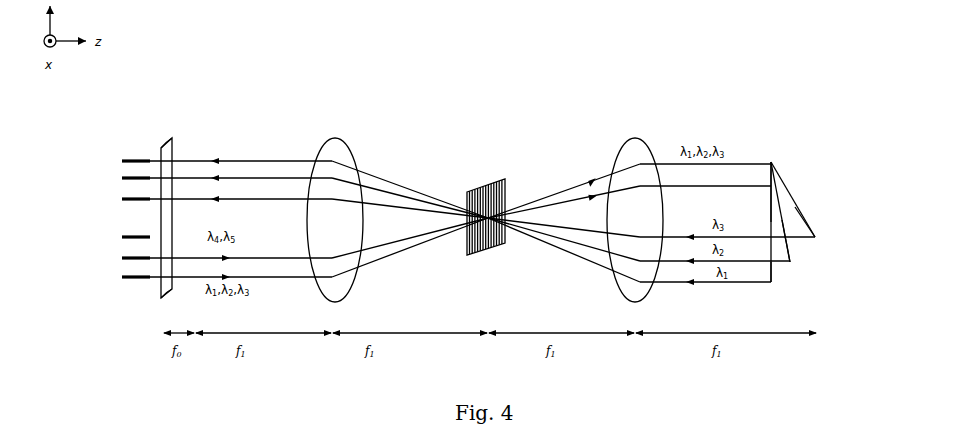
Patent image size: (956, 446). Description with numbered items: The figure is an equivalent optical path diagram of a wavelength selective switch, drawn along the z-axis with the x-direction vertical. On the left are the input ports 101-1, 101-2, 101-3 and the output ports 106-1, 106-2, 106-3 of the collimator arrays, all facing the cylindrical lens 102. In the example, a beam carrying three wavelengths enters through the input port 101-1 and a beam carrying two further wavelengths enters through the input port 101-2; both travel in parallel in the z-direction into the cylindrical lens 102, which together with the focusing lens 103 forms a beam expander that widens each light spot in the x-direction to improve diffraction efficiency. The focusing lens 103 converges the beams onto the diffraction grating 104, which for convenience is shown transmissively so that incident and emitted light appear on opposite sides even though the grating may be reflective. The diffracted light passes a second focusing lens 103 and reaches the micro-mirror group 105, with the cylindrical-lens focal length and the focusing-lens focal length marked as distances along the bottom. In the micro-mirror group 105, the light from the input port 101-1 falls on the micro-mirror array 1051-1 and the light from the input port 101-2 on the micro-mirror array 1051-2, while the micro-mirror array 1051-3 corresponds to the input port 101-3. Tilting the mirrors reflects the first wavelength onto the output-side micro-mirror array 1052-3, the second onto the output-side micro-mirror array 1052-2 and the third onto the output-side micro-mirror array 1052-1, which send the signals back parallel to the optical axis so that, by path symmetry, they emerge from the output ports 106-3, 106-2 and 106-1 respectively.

The cylindrical lens 102 is at (166, 198).
The focusing lens 103 is at (485, 200).
The diffraction grating 104 is at (481, 176).
The micro-mirror group 105 is at (809, 198).
The micro-mirror array 1051-1 is at (760, 151).
The micro-mirror array 1051-2 is at (780, 174).
The micro-mirror array 1051-3 is at (805, 197).
The output-side micro-mirror array 1052-1 is at (826, 228).
The output-side micro-mirror array 1052-2 is at (802, 252).
The output-side micro-mirror array 1052-3 is at (774, 280).
The input port 101-1 is at (110, 277).
The input port 101-2 is at (110, 258).
The input port 101-3 is at (110, 237).
The output port 106-1 is at (110, 199).
The output port 106-2 is at (110, 178).
The output port 106-3 is at (110, 161).